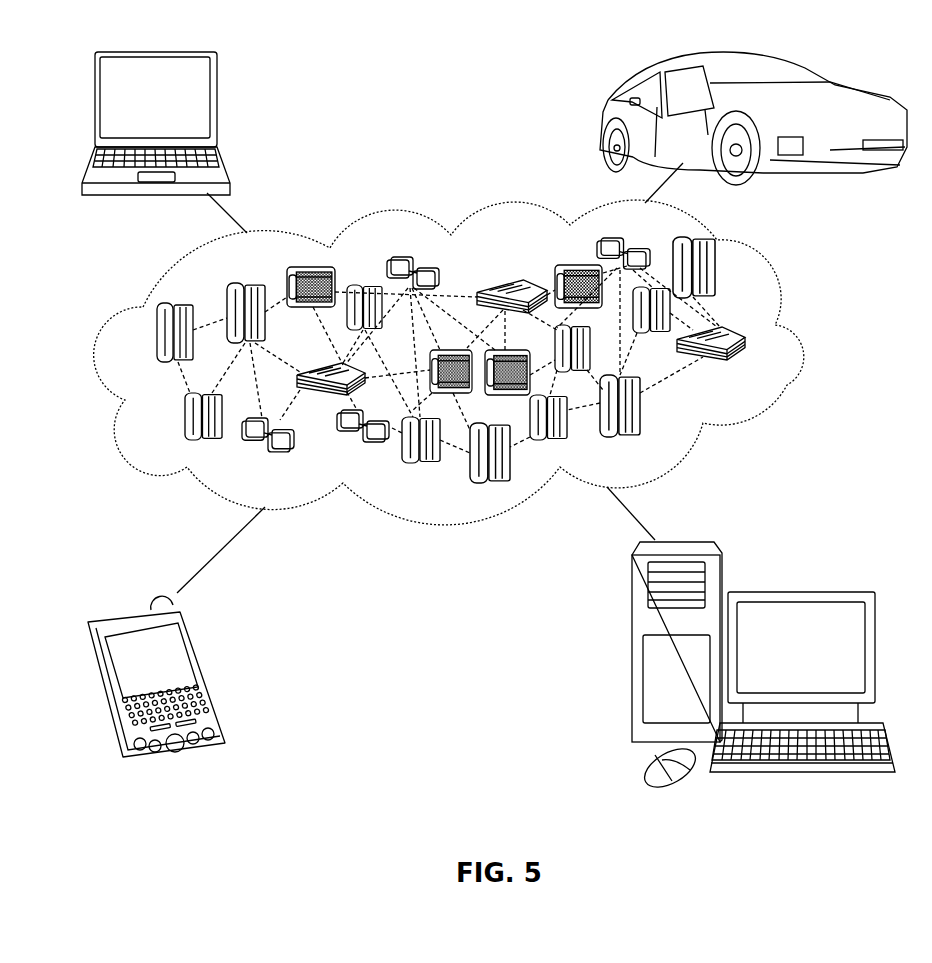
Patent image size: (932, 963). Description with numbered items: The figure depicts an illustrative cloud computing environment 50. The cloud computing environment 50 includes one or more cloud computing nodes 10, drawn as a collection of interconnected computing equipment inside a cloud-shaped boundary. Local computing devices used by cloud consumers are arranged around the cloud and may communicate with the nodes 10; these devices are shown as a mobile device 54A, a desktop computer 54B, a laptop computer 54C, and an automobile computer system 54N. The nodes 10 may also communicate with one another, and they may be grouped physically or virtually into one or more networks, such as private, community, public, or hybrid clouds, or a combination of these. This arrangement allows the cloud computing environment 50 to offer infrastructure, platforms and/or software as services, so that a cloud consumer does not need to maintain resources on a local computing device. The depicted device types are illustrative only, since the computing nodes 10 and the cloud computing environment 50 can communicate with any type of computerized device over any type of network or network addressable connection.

The cloud computing node 10 is at (496, 360).
The cloud computing environment 50 is at (473, 362).
The mobile device 54A is at (208, 674).
The desktop computer 54B is at (798, 592).
The laptop computer 54C is at (218, 105).
The automobile computer system 54N is at (605, 118).